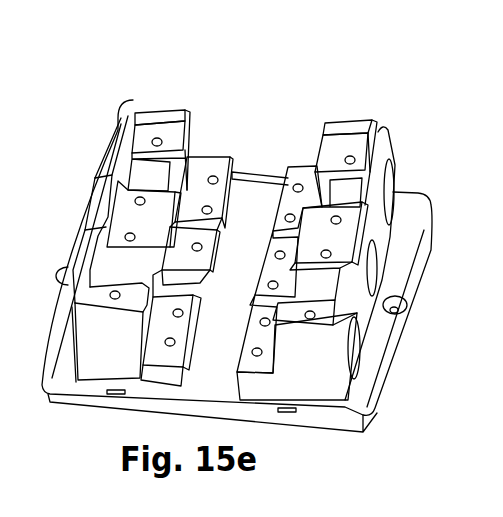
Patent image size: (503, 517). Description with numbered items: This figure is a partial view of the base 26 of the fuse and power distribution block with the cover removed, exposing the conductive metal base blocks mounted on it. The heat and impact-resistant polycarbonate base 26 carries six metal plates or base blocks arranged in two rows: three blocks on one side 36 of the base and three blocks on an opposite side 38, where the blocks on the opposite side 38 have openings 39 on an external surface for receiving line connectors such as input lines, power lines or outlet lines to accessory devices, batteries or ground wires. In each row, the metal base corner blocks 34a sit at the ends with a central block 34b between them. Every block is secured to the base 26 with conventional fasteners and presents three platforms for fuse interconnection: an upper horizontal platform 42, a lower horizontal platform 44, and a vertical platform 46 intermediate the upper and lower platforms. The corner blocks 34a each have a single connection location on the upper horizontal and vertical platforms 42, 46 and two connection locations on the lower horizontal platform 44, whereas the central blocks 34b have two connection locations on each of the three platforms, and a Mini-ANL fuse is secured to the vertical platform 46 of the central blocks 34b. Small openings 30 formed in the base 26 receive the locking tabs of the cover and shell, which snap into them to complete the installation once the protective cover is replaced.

The base 26 is at (364, 428).
The openings 30 is at (95, 400).
The corner blocks 34a is at (185, 112).
The central blocks 34b is at (98, 210).
The one side 36 is at (152, 86).
The opposite side 38 is at (392, 110).
The openings 39 is at (393, 167).
The upper horizontal platform 42 is at (127, 213).
The lower horizontal platform 44 is at (166, 356).
The vertical platform 46 is at (192, 145).